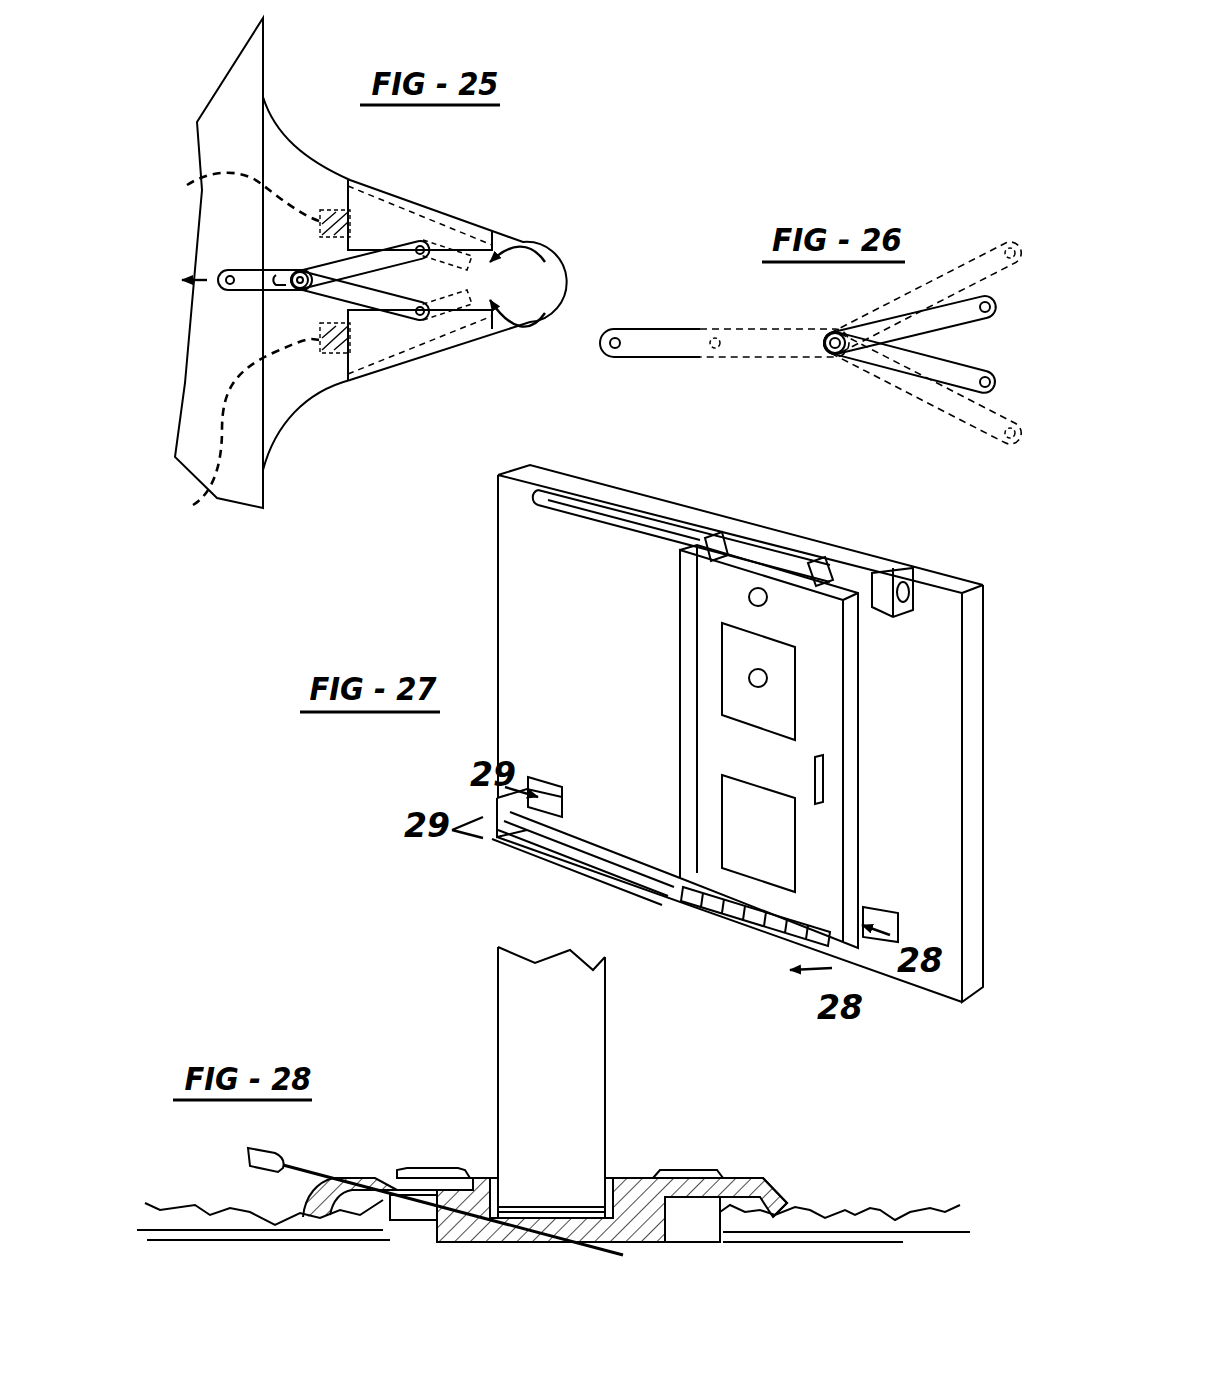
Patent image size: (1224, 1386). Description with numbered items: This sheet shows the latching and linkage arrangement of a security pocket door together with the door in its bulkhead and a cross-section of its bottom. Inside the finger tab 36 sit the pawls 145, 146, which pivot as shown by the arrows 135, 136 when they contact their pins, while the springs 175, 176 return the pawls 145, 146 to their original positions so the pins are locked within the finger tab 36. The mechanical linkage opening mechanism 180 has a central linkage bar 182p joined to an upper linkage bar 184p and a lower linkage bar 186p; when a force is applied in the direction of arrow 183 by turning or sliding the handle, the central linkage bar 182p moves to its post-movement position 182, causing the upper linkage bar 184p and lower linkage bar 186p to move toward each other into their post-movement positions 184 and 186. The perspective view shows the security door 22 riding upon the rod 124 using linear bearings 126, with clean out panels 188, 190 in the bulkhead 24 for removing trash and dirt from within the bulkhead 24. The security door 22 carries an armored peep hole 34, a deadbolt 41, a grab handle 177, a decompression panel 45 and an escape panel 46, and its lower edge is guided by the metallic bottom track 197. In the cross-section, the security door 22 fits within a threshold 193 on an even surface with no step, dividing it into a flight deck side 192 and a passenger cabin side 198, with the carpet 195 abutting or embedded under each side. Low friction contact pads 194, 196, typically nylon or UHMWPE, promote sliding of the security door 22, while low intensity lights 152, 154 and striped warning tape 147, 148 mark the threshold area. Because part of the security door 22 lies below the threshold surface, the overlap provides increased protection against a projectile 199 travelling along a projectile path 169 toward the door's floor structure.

In FIG. 25, the security door 22 is at (262, 20).
In FIG. 27, the security door 22 is at (857, 743).
In FIG. 28, the security door 22 is at (498, 992).
In FIG. 27, the bulkhead 24 is at (984, 622).
In FIG. 27, the armored peep hole 34 is at (768, 678).
In FIG. 25, the finger tab 36 is at (524, 234).
In FIG. 27, the deadbolt 41 is at (768, 598).
In FIG. 27, the decompression panel 45 is at (796, 700).
In FIG. 27, the escape panel 46 is at (800, 835).
In FIG. 27, the rod 124 is at (600, 522).
In FIG. 27, the linear bearings 126 is at (713, 530).
In FIG. 25, the arrow 135 is at (517, 312).
In FIG. 25, the arrow 136 is at (543, 262).
In FIG. 25, the pawl 145 is at (385, 370).
In FIG. 25, the pawl 146 is at (380, 183).
In FIG. 28, the warning tape 147 is at (727, 1180).
In FIG. 28, the warning tape 148 is at (468, 1177).
In FIG. 28, the low intensity lights 152 is at (690, 1170).
In FIG. 28, the low intensity lights 154 is at (433, 1173).
In FIG. 28, the projectile path 169 is at (307, 1168).
In FIG. 25, the spring 175 is at (205, 503).
In FIG. 25, the spring 176 is at (192, 183).
In FIG. 27, the grab handle 177 is at (827, 783).
In FIG. 25, the mechanical linkage opening mechanism 180 is at (492, 170).
In FIG. 26, the mechanical linkage opening mechanism 180 is at (940, 235).
In FIG. 25, the central linkage bar post-movement position 182 is at (243, 293).
In FIG. 26, the central linkage bar post-movement position 182 is at (655, 330).
In FIG. 26, the central linkage bar 182p is at (756, 327).
In FIG. 25, the arrow 183 is at (197, 272).
In FIG. 25, the upper linkage bar post-movement position 184 is at (420, 244).
In FIG. 26, the upper linkage bar post-movement position 184 is at (977, 320).
In FIG. 26, the upper linkage bar 184p is at (972, 262).
In FIG. 25, the lower linkage bar post-movement position 186 is at (430, 325).
In FIG. 26, the lower linkage bar post-movement position 186 is at (973, 370).
In FIG. 26, the lower linkage bar 186p is at (950, 408).
In FIG. 27, the clean out panel 188 is at (562, 793).
In FIG. 27, the clean out panel 190 is at (880, 907).
In FIG. 28, the flight deck side 192 is at (763, 1183).
In FIG. 27, the threshold 193 is at (734, 903).
In FIG. 28, the threshold 193 is at (648, 1222).
In FIG. 28, the contact pad 194 is at (610, 1177).
In FIG. 28, the carpet 195 is at (207, 1198).
In FIG. 28, the contact pad 196 is at (492, 1177).
In FIG. 27, the bottom track 197 is at (608, 870).
In FIG. 28, the passenger cabin side 198 is at (420, 1190).
In FIG. 28, the projectile 199 is at (262, 1145).